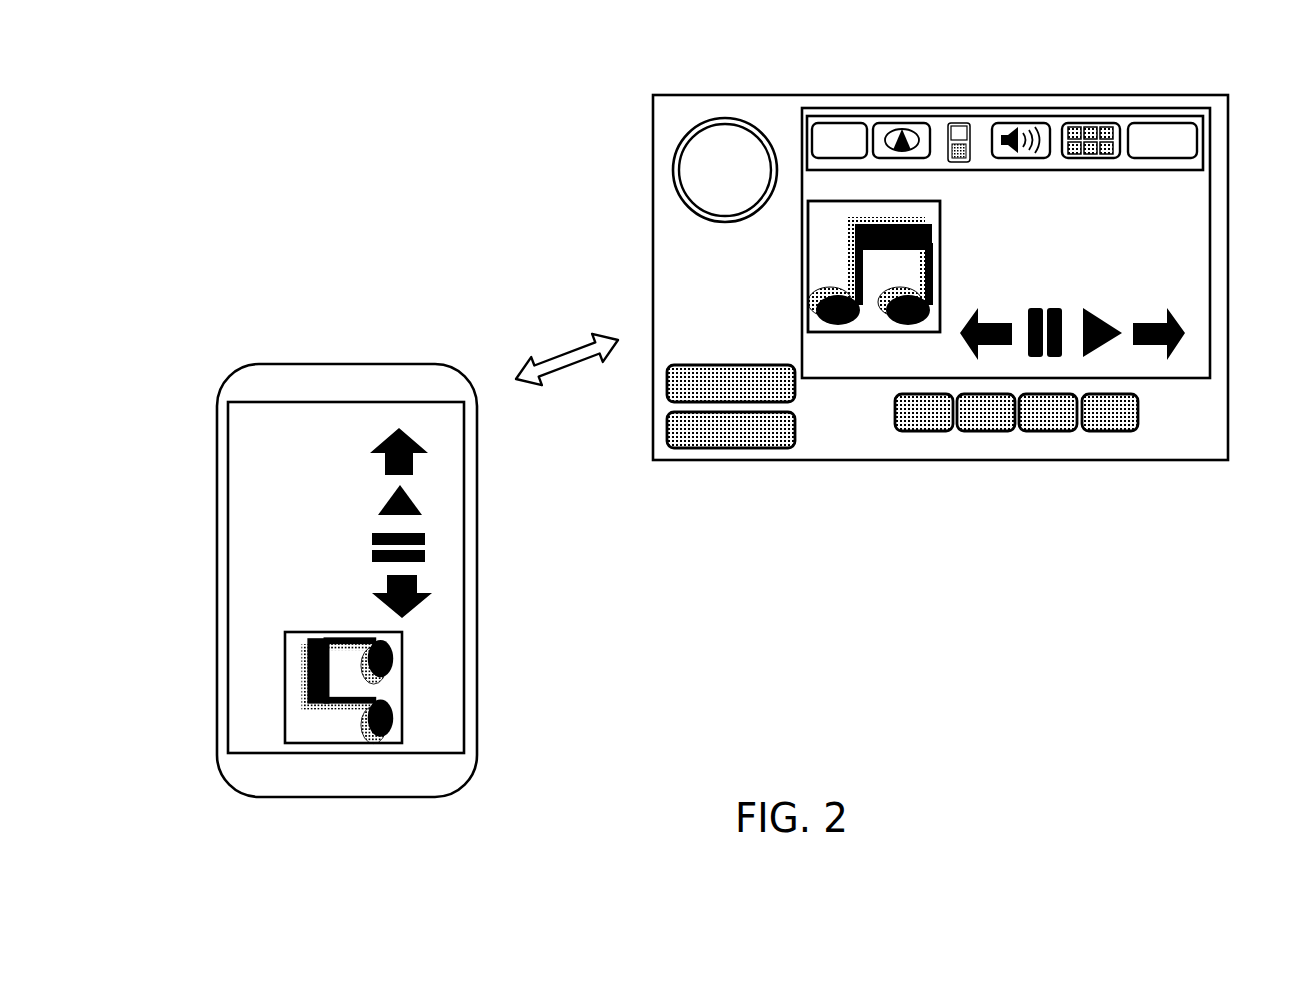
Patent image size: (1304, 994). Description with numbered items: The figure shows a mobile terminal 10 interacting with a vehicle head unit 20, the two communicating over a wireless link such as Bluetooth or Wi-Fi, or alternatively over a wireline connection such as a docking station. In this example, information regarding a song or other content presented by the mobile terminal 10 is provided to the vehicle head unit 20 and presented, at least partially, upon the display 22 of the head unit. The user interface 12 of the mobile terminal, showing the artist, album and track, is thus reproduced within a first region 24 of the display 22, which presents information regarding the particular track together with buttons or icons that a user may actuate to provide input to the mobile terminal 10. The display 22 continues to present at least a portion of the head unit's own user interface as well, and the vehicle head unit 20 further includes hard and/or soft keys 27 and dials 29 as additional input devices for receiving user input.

The mobile terminal 10 is at (375, 350).
The user interface of the mobile terminal 12 is at (455, 520).
The vehicle head unit 20 is at (1175, 75).
The display of the vehicle head unit 22 is at (1190, 277).
The first region 24 is at (1193, 163).
The hard and/or soft keys 27 is at (708, 437).
The dials 29 is at (738, 150).